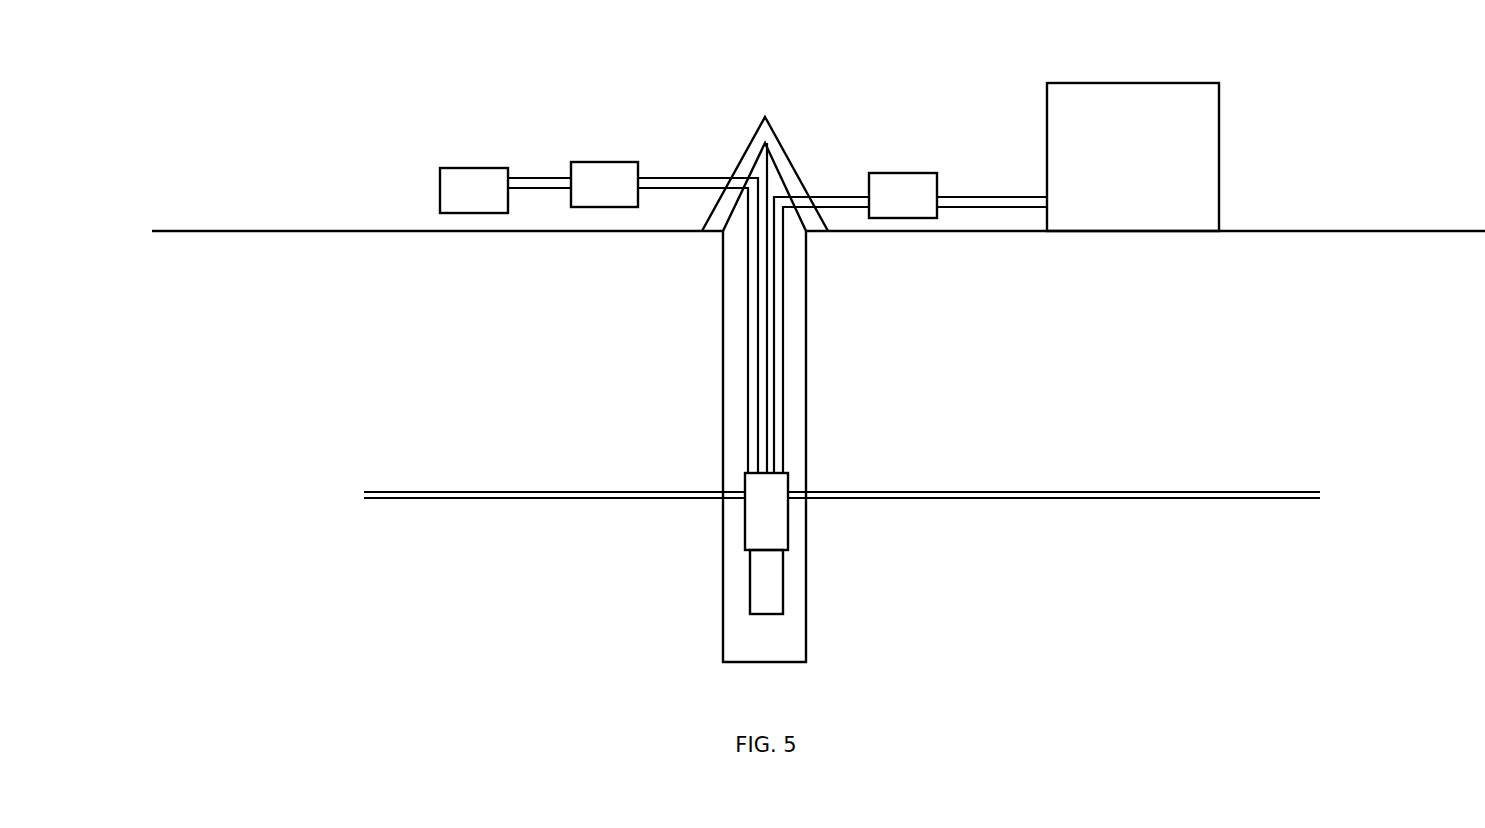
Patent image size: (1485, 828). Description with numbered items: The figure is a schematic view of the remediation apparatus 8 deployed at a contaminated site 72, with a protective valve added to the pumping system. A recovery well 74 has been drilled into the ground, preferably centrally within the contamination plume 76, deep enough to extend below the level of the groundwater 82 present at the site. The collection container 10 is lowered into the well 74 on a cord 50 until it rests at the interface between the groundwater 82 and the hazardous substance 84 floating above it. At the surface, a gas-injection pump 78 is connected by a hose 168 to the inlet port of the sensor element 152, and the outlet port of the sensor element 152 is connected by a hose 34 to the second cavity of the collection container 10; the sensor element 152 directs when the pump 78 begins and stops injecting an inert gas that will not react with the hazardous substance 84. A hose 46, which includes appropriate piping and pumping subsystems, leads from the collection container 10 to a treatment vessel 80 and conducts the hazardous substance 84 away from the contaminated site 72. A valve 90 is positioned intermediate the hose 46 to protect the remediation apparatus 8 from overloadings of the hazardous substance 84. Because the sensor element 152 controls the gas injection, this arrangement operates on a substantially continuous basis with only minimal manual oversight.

The remediation apparatus 8 is at (540, 74).
The collection container 10 is at (793, 562).
The hose 34 is at (695, 178).
The hose 46 is at (850, 197).
The cord 50 is at (767, 293).
The contaminated site 72 is at (554, 357).
The recovery well 74 is at (807, 393).
The contamination plume 76 is at (1081, 584).
The gas-injection pump 78 is at (460, 200).
The treatment vessel 80 is at (1147, 167).
The groundwater 82 is at (582, 582).
The hazardous substance 84 is at (990, 492).
The valve 90 is at (917, 207).
The sensor element 152 is at (625, 197).
The hose 168 is at (552, 178).